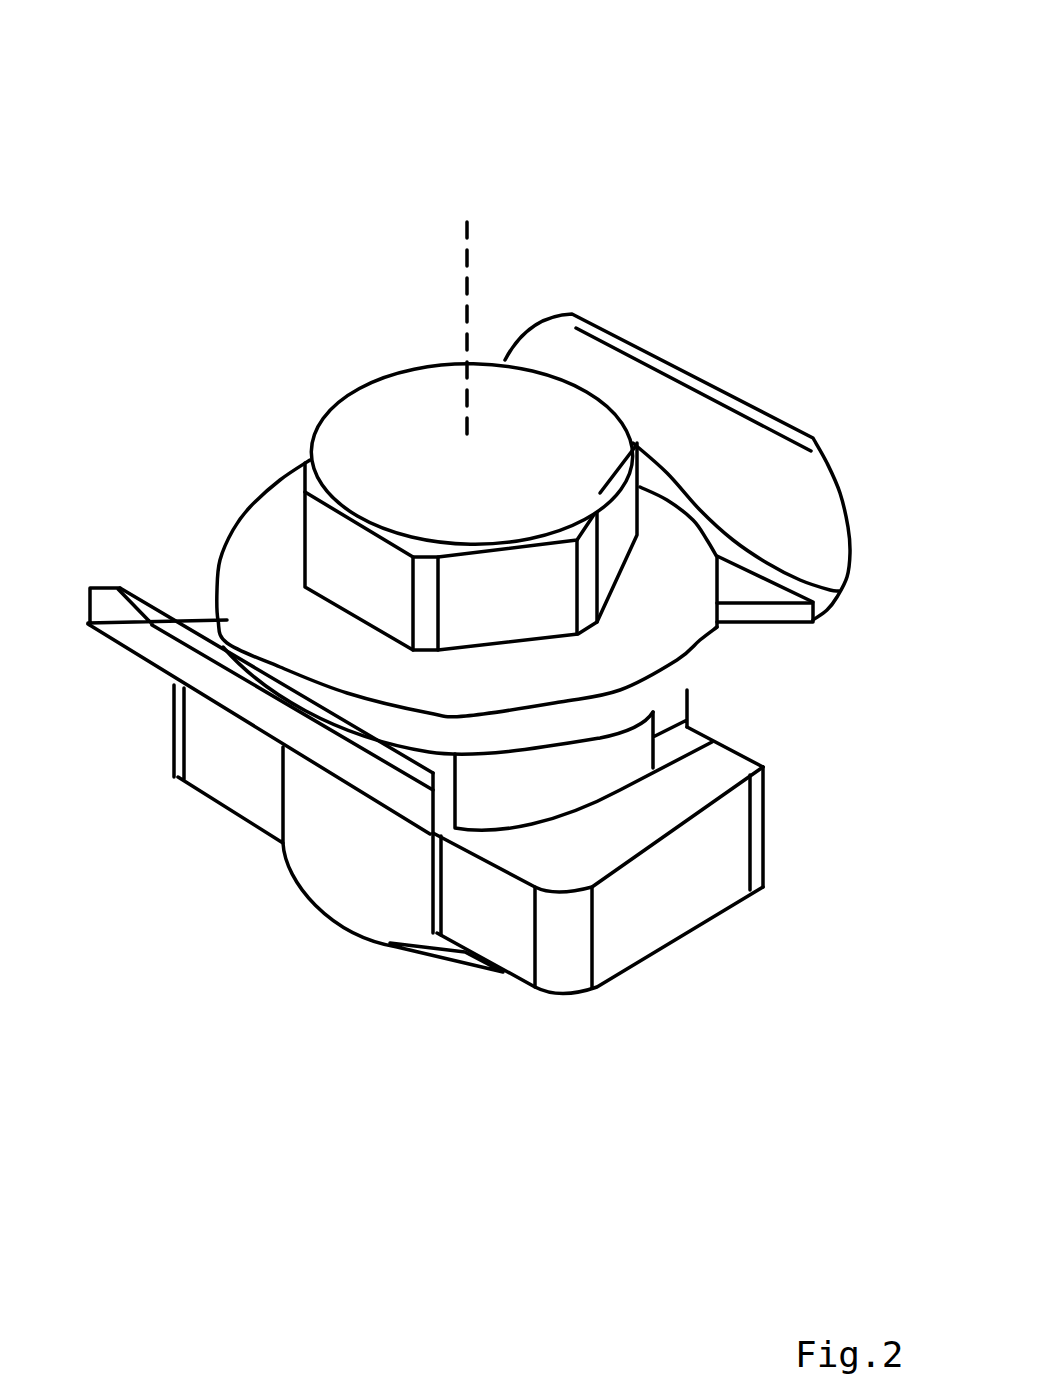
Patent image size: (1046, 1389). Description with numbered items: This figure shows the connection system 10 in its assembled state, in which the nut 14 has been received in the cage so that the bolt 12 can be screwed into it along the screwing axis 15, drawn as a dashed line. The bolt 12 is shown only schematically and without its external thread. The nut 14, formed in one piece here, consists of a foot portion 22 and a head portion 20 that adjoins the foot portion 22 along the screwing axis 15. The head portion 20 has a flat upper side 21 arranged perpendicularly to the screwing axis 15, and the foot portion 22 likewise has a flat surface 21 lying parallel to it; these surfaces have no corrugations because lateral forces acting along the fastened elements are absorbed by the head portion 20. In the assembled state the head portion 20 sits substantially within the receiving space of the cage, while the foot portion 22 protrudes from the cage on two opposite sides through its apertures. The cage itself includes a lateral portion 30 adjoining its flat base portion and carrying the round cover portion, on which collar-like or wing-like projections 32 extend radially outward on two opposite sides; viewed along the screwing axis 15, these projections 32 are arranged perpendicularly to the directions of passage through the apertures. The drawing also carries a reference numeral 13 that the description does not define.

The connection system 10 is at (706, 238).
The bolt 12 is at (392, 423).
The flange washer 13 is at (260, 580).
The nut 14 is at (755, 741).
The screwing axis 15 is at (467, 233).
The head portion 20 is at (580, 763).
The upper side 21 is at (545, 857).
The foot portion 22 is at (676, 893).
The lateral portion 30 is at (327, 837).
The projections 32 is at (717, 443).